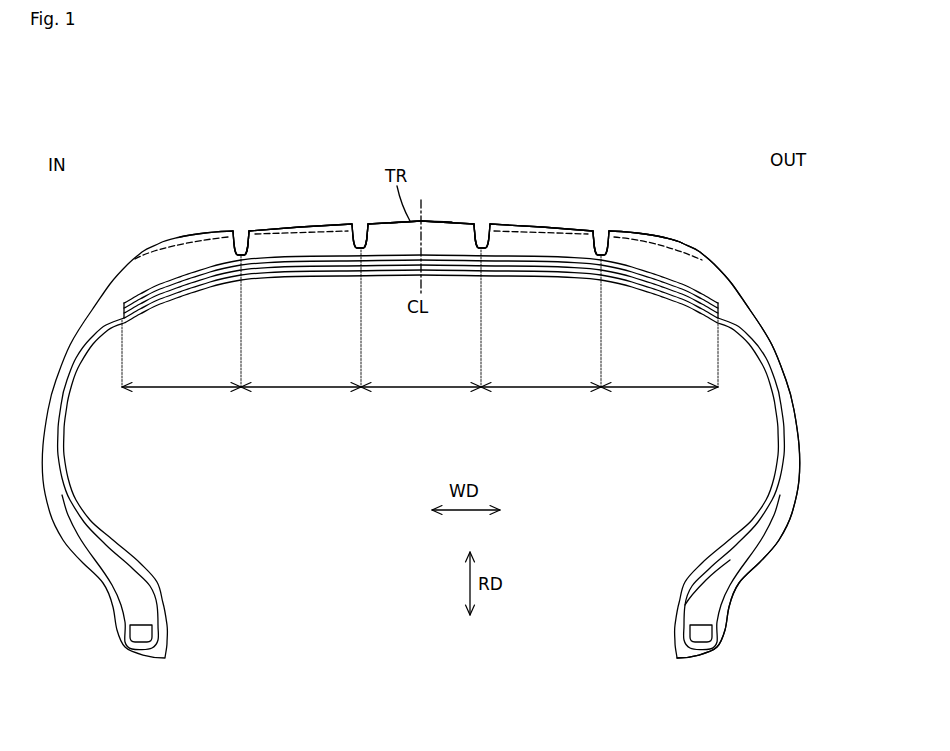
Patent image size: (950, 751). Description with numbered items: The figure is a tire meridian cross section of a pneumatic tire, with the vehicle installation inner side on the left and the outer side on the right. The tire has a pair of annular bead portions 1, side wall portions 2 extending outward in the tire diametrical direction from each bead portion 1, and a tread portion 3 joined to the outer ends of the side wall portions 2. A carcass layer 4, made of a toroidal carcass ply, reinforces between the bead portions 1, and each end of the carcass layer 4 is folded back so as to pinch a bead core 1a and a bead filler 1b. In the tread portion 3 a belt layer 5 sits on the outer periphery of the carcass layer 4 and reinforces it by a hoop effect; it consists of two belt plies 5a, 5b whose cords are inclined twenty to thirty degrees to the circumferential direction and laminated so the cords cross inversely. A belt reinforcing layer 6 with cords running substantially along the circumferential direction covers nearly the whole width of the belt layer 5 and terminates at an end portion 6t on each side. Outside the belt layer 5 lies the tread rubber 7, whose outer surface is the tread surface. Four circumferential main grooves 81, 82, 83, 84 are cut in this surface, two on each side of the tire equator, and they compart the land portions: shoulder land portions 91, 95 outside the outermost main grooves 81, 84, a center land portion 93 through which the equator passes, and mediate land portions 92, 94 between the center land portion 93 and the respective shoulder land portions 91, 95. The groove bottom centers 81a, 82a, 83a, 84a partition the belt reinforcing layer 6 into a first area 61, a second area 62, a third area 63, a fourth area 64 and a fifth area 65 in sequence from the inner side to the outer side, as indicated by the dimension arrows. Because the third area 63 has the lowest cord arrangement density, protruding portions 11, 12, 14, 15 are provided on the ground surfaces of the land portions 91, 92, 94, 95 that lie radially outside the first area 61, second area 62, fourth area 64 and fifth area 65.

The bead portion 1 is at (752, 622).
The bead core 1a is at (700, 628).
The bead filler 1b is at (707, 591).
The side wall portion 2 is at (818, 432).
The tread portion 3 is at (509, 200).
The carcass layer 4 is at (775, 356).
The belt layer 5 is at (421, 310).
The belt ply 5a is at (560, 322).
The belt ply 5b is at (543, 264).
The belt reinforcing layer 6 is at (432, 278).
The end portion of the belt reinforcing layer 6t is at (127, 312).
The tread rubber 7 is at (432, 233).
The protruding portion 11 is at (178, 239).
The protruding portion 12 is at (325, 226).
The protruding portion 14 is at (551, 226).
The protruding portion 15 is at (665, 236).
The main groove 81 is at (238, 229).
The groove bottom center 81a is at (250, 247).
The main groove 82 is at (359, 226).
The groove bottom center 82a is at (369, 246).
The main groove 83 is at (483, 226).
The groove bottom center 83a is at (478, 247).
The main groove 84 is at (604, 229).
The groove bottom center 84a is at (597, 247).
The shoulder land portion 91 is at (199, 227).
The mediate land portion 92 is at (300, 224).
The center land portion 93 is at (437, 220).
The mediate land portion 94 is at (515, 223).
The shoulder land portion 95 is at (646, 225).
The first area 61 is at (181, 376).
The second area 62 is at (301, 376).
The third area 63 is at (421, 376).
The fourth area 64 is at (541, 376).
The fifth area 65 is at (659, 376).